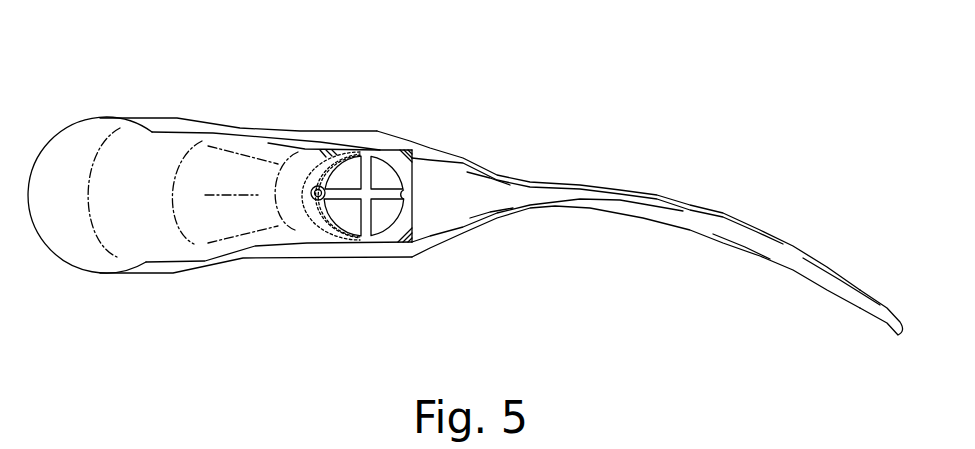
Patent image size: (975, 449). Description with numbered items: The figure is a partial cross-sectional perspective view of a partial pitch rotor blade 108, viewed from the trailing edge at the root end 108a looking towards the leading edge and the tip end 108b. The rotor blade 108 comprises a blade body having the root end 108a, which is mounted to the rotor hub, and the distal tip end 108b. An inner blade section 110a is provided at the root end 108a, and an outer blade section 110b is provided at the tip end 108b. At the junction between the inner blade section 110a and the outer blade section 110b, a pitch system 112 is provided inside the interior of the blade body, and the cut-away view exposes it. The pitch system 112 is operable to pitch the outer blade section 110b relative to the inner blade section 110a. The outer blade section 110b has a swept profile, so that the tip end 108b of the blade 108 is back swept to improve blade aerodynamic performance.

The rotor blade 108 is at (620, 130).
The root end 108a is at (92, 117).
The tip end 108b is at (888, 323).
The inner blade section 110a is at (173, 240).
The outer blade section 110b is at (643, 204).
The pitch system 112 is at (343, 237).